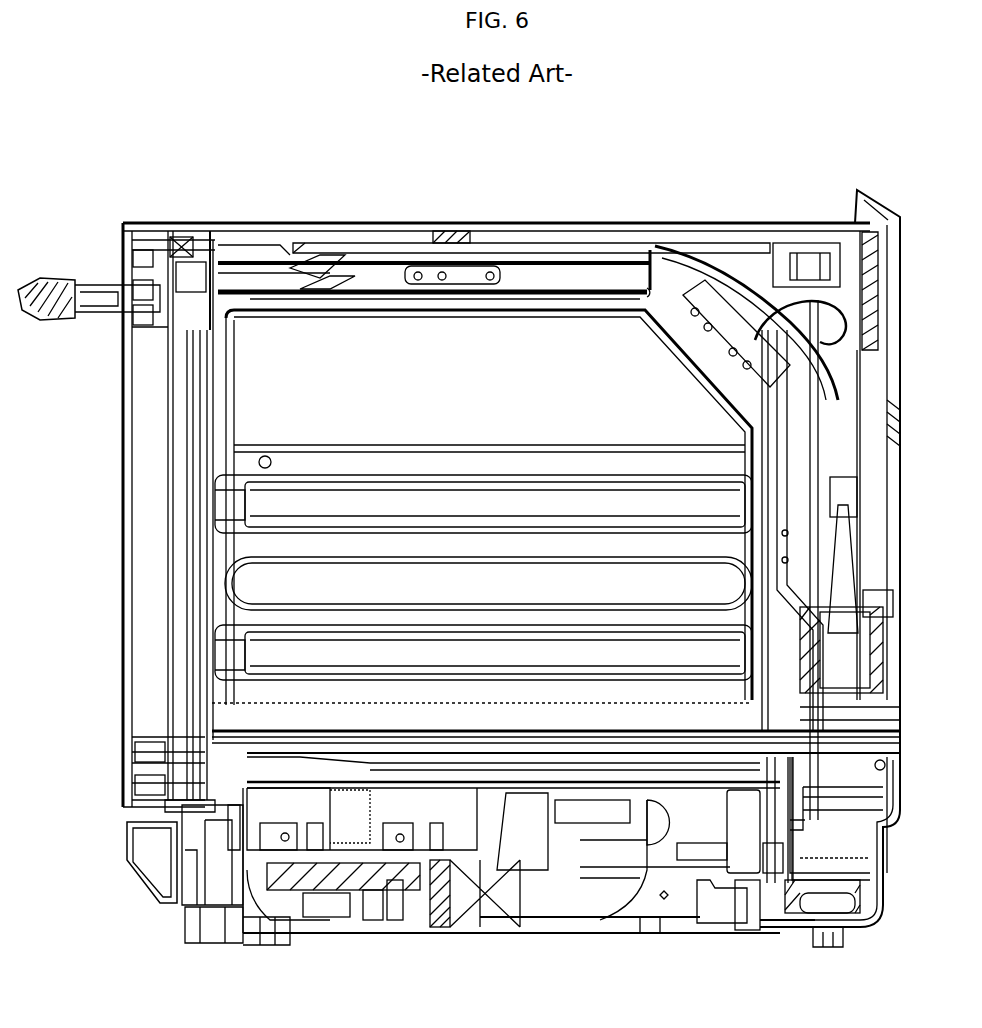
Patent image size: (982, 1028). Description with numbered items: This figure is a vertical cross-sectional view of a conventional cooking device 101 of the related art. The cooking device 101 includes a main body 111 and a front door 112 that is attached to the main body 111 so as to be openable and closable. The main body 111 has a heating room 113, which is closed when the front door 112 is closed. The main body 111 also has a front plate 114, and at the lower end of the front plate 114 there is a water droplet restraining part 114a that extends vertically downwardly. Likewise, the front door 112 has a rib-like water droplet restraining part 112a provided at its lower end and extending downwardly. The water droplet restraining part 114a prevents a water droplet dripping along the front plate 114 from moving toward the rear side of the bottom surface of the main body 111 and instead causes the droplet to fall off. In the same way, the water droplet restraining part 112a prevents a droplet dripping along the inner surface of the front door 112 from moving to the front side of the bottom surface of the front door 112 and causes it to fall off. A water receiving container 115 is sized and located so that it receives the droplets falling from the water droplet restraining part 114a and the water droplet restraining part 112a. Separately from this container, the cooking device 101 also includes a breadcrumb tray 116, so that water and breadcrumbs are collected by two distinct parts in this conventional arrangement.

The cooking device 101 is at (712, 182).
The main body 111 is at (284, 222).
The front door 112 is at (172, 222).
The water droplet restraining part 112a is at (205, 806).
The heating room 113 is at (427, 372).
The front plate 114 is at (205, 808).
The water droplet restraining part 114a is at (208, 812).
The water receiving container 115 is at (127, 846).
The breadcrumb tray 116 is at (333, 790).